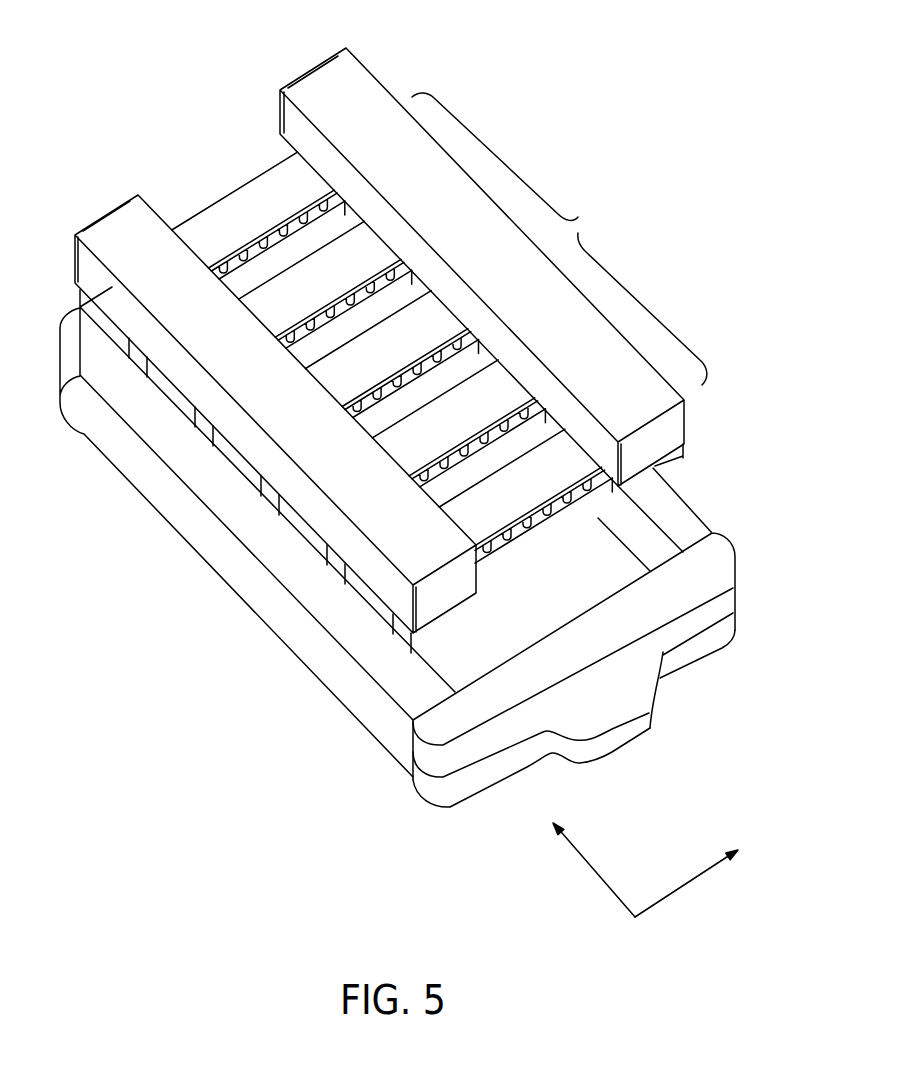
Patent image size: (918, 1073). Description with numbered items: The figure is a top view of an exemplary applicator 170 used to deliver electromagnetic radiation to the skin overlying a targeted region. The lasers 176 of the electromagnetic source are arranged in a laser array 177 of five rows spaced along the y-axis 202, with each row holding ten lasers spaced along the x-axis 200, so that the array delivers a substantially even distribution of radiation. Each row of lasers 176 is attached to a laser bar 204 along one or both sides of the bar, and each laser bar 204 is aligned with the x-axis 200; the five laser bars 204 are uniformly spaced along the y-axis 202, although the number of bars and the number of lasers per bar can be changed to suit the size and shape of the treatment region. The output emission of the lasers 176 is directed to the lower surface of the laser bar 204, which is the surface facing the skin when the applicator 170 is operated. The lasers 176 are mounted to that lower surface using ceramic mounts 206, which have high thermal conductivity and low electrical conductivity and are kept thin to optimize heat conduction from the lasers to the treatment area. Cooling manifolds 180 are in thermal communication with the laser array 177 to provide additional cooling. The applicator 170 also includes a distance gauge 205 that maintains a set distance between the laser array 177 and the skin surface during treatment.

The applicator 170 is at (554, 82).
The lasers 176 is at (507, 553).
The laser array 177 is at (559, 239).
The cooling manifolds 180 is at (317, 66).
The x-axis 200 is at (687, 887).
The y-axis 202 is at (597, 873).
The laser bar 204 is at (553, 488).
The distance gauge 205 is at (150, 495).
The ceramic mounts 206 is at (530, 521).